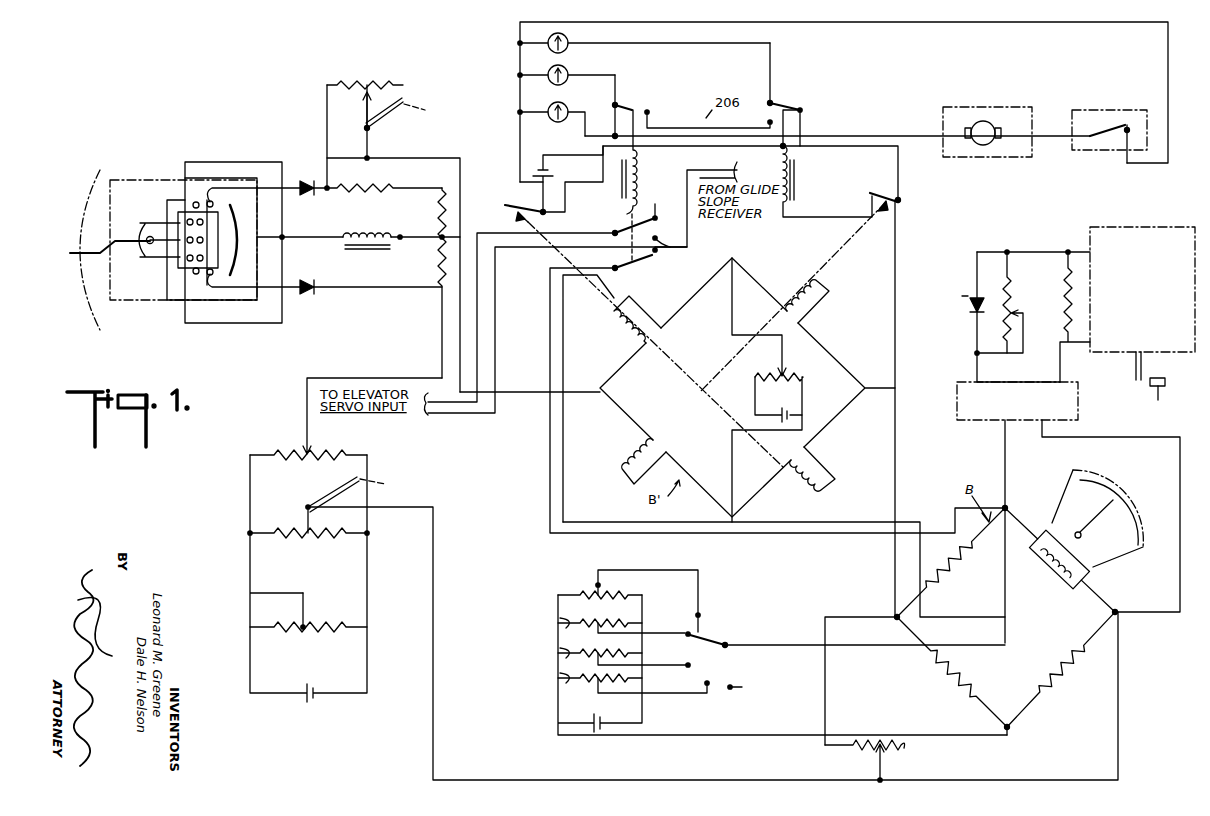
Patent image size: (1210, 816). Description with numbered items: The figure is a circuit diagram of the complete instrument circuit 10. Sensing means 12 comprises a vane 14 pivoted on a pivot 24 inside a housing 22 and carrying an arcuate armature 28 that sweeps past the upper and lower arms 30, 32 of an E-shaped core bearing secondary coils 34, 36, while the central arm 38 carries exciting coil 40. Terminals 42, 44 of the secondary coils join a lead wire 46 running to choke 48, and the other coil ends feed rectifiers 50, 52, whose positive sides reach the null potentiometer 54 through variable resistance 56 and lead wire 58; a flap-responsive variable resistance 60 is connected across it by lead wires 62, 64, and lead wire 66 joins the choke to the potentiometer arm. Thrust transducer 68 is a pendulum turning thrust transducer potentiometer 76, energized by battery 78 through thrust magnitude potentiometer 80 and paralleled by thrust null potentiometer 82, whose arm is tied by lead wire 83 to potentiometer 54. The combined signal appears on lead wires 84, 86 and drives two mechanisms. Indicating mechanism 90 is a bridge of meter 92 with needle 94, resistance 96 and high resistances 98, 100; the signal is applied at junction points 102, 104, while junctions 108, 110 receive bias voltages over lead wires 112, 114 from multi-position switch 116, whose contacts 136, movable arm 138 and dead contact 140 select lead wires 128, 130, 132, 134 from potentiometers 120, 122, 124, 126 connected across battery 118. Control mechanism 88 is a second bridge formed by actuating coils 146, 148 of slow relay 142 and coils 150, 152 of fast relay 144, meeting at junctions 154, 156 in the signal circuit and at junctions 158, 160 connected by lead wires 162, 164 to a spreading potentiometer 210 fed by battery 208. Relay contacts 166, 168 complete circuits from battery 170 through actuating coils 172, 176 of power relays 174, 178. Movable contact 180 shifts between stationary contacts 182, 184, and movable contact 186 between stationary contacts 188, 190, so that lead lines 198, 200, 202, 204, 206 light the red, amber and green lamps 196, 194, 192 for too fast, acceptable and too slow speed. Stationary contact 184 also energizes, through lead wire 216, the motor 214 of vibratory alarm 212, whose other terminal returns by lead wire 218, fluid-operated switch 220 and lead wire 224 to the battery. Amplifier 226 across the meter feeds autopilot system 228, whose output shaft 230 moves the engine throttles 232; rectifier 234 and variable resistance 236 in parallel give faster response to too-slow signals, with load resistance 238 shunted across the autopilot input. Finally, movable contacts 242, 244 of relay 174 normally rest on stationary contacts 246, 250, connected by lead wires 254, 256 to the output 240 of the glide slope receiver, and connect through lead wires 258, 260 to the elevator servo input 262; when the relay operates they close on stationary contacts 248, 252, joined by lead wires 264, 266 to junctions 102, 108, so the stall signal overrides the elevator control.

The circuit 10 is at (230, 86).
The sensing means 12 is at (188, 152).
The vane 14 is at (92, 250).
The housing 22 is at (155, 306).
The pivot 24 is at (146, 236).
The armature 28 is at (226, 222).
The upper arm 30 is at (222, 195).
The lower arm 32 is at (222, 290).
The secondary coil 34 is at (190, 205).
The secondary coil 36 is at (190, 275).
The central arm 38 is at (240, 240).
The exciting coil 40 is at (198, 240).
The terminal 42 is at (225, 323).
The terminal 44 is at (270, 163).
The lead wire 46 is at (312, 237).
The choke 48 is at (366, 230).
The rectifier 50 is at (300, 182).
The rectifier 52 is at (308, 296).
The null potentiometer 54 is at (435, 208).
The variable resistance 56 is at (360, 190).
The lead wire 58 is at (412, 158).
The variable resistance 60 is at (378, 80).
The lead wire 62 is at (327, 118).
The lead wire 64 is at (365, 142).
The lead wire 66 is at (416, 240).
The thrust transducer 68 is at (380, 476).
The thrust transducer potentiometer 76 is at (308, 540).
The battery 78 is at (308, 700).
The thrust magnitude potentiometer 80 is at (334, 624).
The thrust null potentiometer 82 is at (288, 452).
The lead wire 83 is at (374, 378).
The lead wire 84 is at (512, 392).
The lead wire 86 is at (514, 783).
The control mechanism 88 is at (732, 382).
The indicating mechanism 90 is at (1056, 478).
The meter 92 is at (1052, 578).
The needle 94 is at (1096, 516).
The resistance 96 is at (940, 578).
The resistance 98 is at (1068, 680).
The resistance 100 is at (955, 680).
The junction point 102 is at (1118, 610).
The junction point 104 is at (890, 614).
The junction 108 is at (1008, 508).
The junction 110 is at (1012, 728).
The lead wire 112 is at (770, 735).
The lead wire 114 is at (800, 642).
The multi-position switch 116 is at (768, 618).
The battery 118 is at (556, 715).
The potentiometer 120 is at (556, 676).
The potentiometer 122 is at (556, 648).
The potentiometer 124 is at (556, 620).
The potentiometer 126 is at (560, 586).
The lead wire 128 is at (690, 693).
The lead wire 130 is at (664, 664).
The lead wire 132 is at (660, 632).
The lead wire 134 is at (668, 566).
The contacts 136 is at (704, 614).
The movable arm 138 is at (710, 640).
The dead contact 140 is at (751, 686).
The slow relay 142 is at (598, 286).
The fast relay 144 is at (870, 236).
The actuating coil 146 is at (612, 322).
The second actuating coil 148 is at (804, 500).
The actuating coil 150 is at (802, 272).
The second actuating coil 152 is at (620, 462).
The junction 154 is at (606, 388).
The junction 156 is at (866, 388).
The junction 158 is at (736, 258).
The junction 160 is at (716, 530).
The lead wire 162 is at (734, 330).
The lead wire 164 is at (734, 460).
The contacts 166 is at (505, 206).
The contacts 168 is at (866, 196).
The battery 170 is at (550, 167).
The actuating coil 172 is at (626, 184).
The power relay 174 is at (652, 121).
The actuating coil 176 is at (790, 180).
The power relay 178 is at (822, 112).
The movable contact 180 is at (638, 110).
The stationary contact 182 is at (618, 103).
The stationary contact 184 is at (605, 122).
The movable contact 186 is at (794, 106).
The stationary contact 188 is at (768, 100).
The stationary contact 190 is at (766, 122).
The lamp 192 is at (550, 105).
The lamp 194 is at (571, 78).
The lamp 196 is at (571, 46).
The lead line 198 is at (520, 158).
The lead line 200 is at (732, 42).
The lead line 202 is at (566, 120).
The lead line 204 is at (615, 72).
The lead line 206 is at (905, 754).
The battery 208 is at (760, 413).
The potentiometer 210 is at (780, 368).
The vibratory aircraft alarm 212 is at (1018, 107).
The motor 214 is at (983, 121).
The lead wire 216 is at (930, 134).
The lead wire 218 is at (1051, 122).
The switch 220 is at (1124, 108).
The lead wire 224 is at (1020, 24).
The amplifier 226 is at (972, 424).
The autopilot system 228 is at (1092, 226).
The output shaft 230 is at (1134, 368).
The engine throttles 232 is at (1152, 388).
The rectifier 234 is at (968, 306).
The variable resistance 236 is at (1008, 296).
The load resistance 238 is at (1062, 300).
The output of ILS Glide Slope Receiver 240 is at (740, 172).
The movable contact 242 is at (630, 248).
The movable contact 244 is at (638, 268).
The stationary contact 246 is at (628, 212).
The stationary contact 248 is at (662, 256).
The stationary contact 250 is at (666, 262).
The stationary contact 252 is at (652, 268).
The lead wire 254 is at (640, 160).
The lead wire 256 is at (690, 246).
The lead wire 258 is at (514, 220).
The lead wire 260 is at (508, 276).
The input of the elevator control 262 is at (430, 412).
The lead wire 264 is at (505, 318).
The lead wire 266 is at (530, 342).